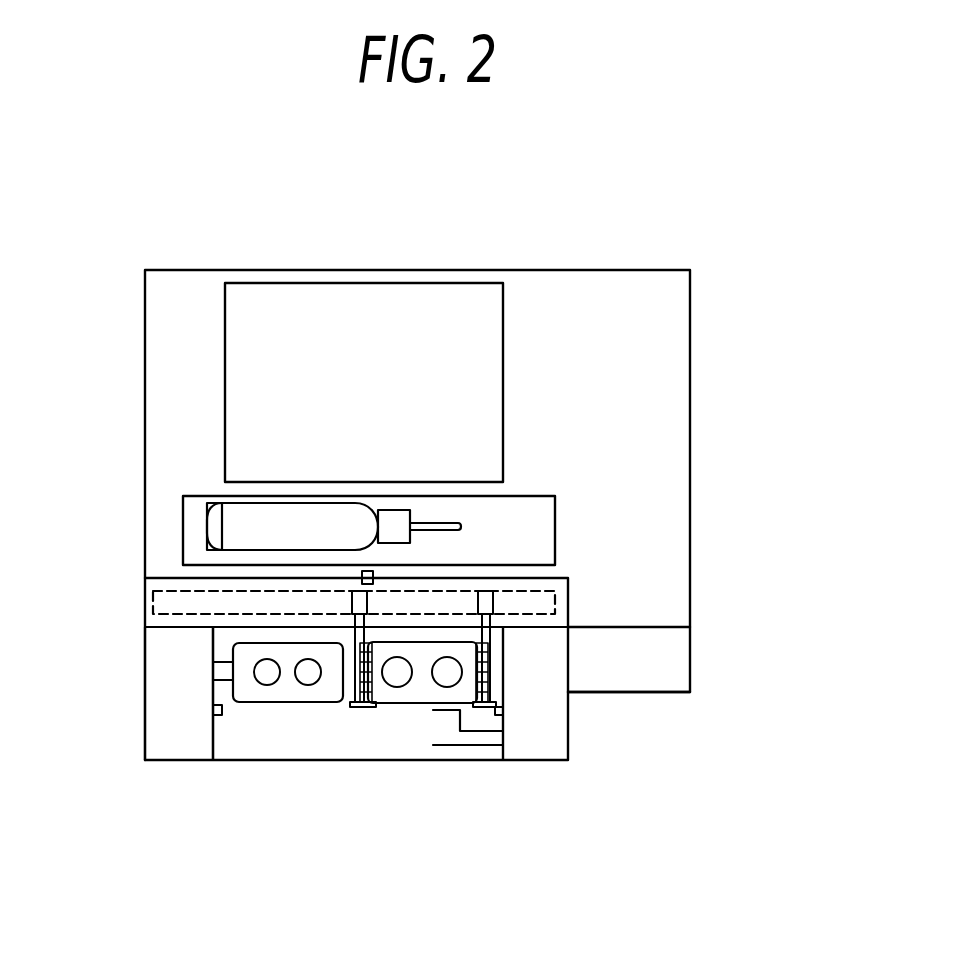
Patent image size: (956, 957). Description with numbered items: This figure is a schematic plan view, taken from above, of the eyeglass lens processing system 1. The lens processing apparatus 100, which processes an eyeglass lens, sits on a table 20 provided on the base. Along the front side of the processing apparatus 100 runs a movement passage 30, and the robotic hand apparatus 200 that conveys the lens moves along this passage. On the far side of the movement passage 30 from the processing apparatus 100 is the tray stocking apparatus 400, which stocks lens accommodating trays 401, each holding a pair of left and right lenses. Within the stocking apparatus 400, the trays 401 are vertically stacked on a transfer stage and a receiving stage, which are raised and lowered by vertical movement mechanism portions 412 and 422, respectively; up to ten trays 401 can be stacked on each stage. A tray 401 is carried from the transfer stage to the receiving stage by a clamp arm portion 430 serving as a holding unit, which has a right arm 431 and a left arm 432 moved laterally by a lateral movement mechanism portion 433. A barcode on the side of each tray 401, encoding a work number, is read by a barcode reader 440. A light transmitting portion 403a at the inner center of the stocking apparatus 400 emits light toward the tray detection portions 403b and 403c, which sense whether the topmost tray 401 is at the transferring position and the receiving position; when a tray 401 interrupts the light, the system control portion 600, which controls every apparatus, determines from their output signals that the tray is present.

The processing system 1 is at (710, 320).
The table 20 is at (195, 380).
The movement passage 30 is at (520, 505).
The lens processing apparatus 100 is at (372, 292).
The robotic hand apparatus 200 is at (230, 523).
The tray stocking apparatus 400 is at (270, 838).
The lens accommodating tray 401 is at (420, 706).
The light transmitting portion 403a is at (360, 577).
The tray detection portion 403b is at (504, 713).
The tray detection portion 403c is at (212, 710).
The vertical movement mechanism portion 412 is at (523, 746).
The vertical movement mechanism portion 422 is at (190, 742).
The clamp arm portion 430 is at (428, 592).
The right arm 431 is at (494, 676).
The left arm 432 is at (355, 707).
The lateral movement mechanism portion 433 is at (556, 597).
The barcode reader 440 is at (457, 746).
The system control portion 600 is at (668, 657).